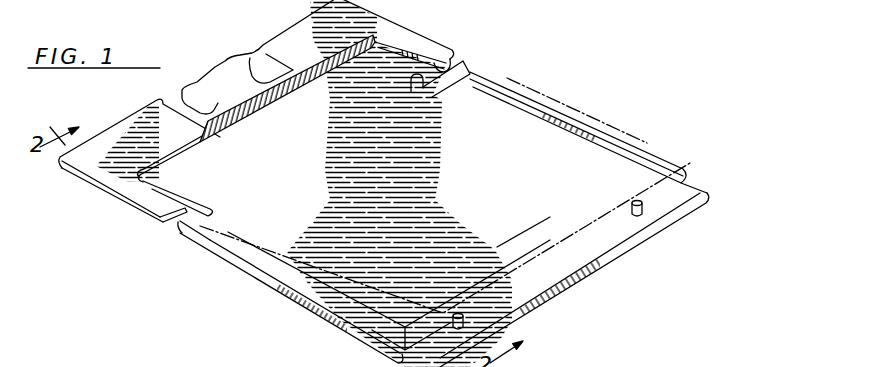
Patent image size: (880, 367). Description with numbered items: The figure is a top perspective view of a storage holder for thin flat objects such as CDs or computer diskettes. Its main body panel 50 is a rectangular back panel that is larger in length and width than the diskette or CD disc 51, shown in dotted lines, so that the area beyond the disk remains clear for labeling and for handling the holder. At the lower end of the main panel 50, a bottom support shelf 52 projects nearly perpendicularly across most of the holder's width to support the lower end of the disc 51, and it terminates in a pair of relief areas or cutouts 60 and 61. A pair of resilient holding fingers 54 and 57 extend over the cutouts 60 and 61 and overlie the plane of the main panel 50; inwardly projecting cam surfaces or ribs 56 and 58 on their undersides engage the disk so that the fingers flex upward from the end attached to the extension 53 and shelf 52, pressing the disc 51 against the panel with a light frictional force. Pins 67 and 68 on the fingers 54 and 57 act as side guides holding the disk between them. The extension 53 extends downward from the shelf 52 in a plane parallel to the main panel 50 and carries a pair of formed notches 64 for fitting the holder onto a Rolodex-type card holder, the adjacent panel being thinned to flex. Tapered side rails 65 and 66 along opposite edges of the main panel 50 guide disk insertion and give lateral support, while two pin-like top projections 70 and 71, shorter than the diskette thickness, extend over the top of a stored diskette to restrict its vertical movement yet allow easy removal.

The main body panel 50 is at (597, 262).
The diskette or CD disc 51 is at (653, 148).
The bottom support shelf 52 is at (272, 108).
The extension 53 is at (93, 162).
The resilient holding finger 54 is at (432, 47).
The cam surface or rib 56 is at (462, 62).
The resilient holding finger 57 is at (150, 204).
The cam surface or rib 58 is at (187, 226).
The relief area or cutout 60 is at (413, 90).
The relief area or cutout 61 is at (192, 215).
The formed notches 64 is at (197, 100).
The tapered side rail 65 is at (587, 137).
The tapered side rail 66 is at (340, 308).
The pin 67 is at (449, 60).
The pin 68 is at (173, 225).
The pin-like top projection 70 is at (631, 204).
The pin-like top projection 71 is at (457, 313).